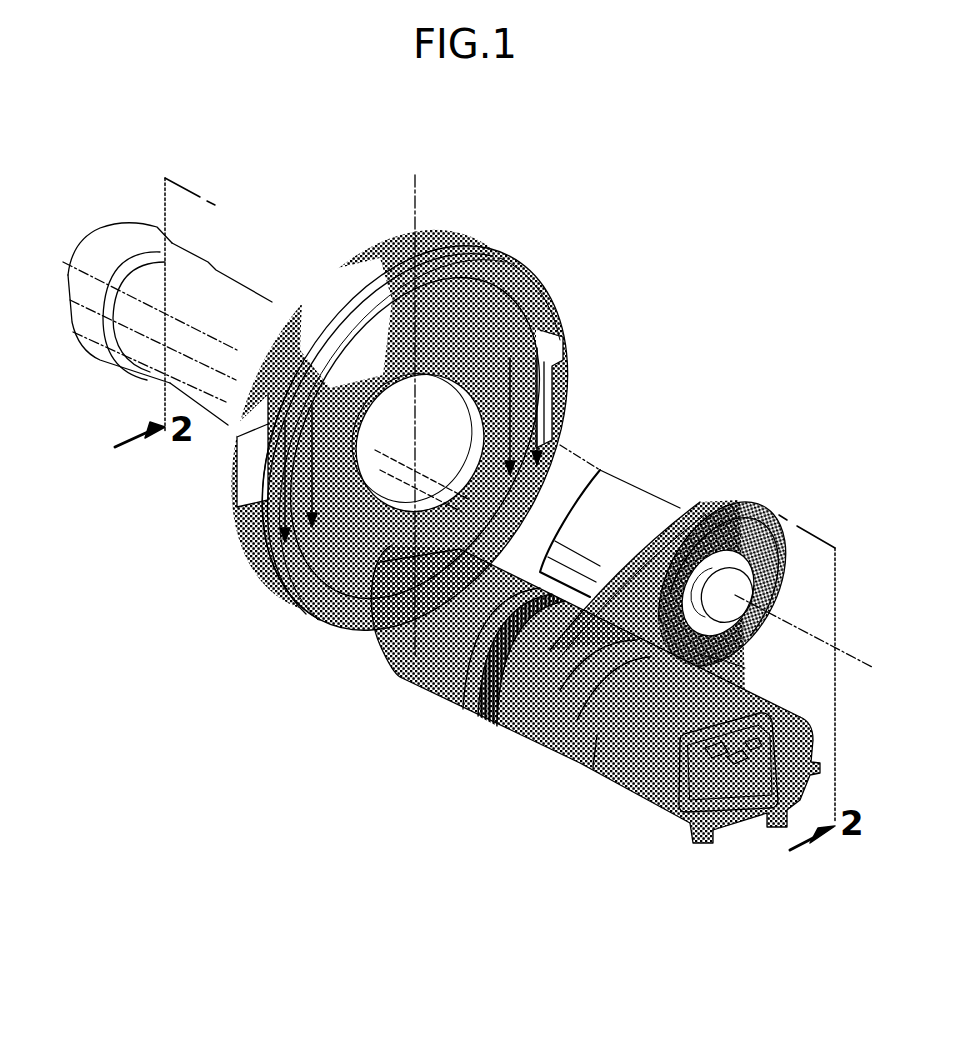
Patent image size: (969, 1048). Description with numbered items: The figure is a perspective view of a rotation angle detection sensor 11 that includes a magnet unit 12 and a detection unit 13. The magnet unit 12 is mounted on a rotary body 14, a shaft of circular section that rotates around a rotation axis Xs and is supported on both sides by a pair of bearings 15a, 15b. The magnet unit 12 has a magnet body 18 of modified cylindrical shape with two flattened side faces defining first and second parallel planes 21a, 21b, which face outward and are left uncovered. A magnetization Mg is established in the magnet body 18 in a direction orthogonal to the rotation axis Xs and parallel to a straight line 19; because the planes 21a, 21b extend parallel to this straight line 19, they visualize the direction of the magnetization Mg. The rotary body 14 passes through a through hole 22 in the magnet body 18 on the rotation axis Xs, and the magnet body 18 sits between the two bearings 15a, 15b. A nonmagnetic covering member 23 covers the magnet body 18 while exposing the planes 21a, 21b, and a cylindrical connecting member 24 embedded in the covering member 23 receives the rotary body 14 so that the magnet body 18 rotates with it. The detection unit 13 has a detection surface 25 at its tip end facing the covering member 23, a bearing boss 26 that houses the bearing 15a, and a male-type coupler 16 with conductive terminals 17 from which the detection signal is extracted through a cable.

The rotation angle detection sensor 11 is at (697, 461).
The magnet unit 12 is at (505, 254).
The detection unit 13 is at (607, 806).
The rotary body 14 is at (238, 298).
The bearing 15a is at (733, 552).
The bearing 15b is at (123, 245).
The coupler 16 is at (808, 745).
The terminals 17 is at (753, 746).
The magnet body 18 is at (508, 316).
The straight line 19 is at (417, 202).
The first plane 21a is at (550, 414).
The second plane 21b is at (240, 462).
The through hole 22 is at (415, 438).
The covering member 23 is at (240, 553).
The connecting member 24 is at (334, 516).
The detection surface 25 is at (372, 645).
The bearing boss 26 is at (738, 654).
The magnetization Mg is at (534, 398).
The rotation axis Xs is at (872, 667).